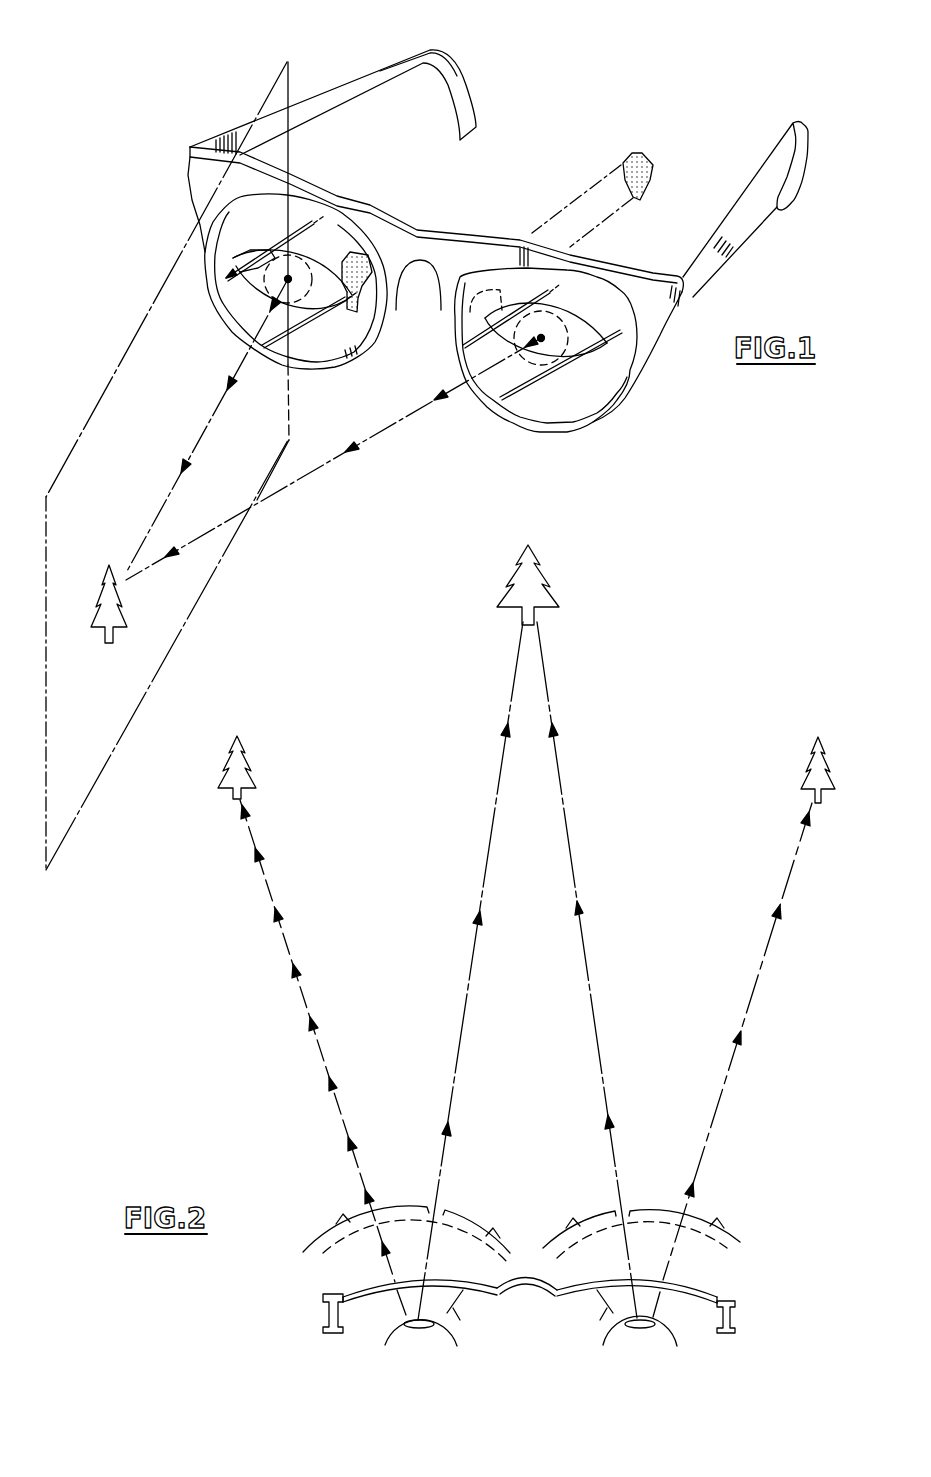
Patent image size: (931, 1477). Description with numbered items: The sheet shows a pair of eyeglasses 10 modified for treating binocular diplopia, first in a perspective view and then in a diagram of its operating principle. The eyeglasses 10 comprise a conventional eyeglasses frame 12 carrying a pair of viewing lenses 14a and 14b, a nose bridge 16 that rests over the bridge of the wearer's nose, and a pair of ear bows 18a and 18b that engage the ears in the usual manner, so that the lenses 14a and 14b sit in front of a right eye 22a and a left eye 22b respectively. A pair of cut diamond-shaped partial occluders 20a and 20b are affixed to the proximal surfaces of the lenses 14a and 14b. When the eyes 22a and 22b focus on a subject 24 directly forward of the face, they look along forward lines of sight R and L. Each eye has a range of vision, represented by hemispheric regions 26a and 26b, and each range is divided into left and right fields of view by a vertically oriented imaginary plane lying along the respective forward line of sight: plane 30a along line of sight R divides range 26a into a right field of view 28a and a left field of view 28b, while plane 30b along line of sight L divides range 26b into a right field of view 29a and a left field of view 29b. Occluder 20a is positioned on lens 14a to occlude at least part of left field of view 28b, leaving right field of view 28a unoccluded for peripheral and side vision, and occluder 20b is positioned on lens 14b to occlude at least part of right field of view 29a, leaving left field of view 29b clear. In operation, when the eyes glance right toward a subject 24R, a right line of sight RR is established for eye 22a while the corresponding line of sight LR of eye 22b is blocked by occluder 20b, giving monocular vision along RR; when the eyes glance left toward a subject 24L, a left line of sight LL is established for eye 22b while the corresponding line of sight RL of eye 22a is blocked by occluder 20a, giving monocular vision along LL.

In FIG. 1, the eyeglasses 10 is at (700, 93).
In FIG. 1, the eyeglasses frame 12 is at (190, 170).
In FIG. 1, the viewing lens 14a is at (228, 228).
In FIG. 2, the viewing lens 14a is at (680, 1283).
In FIG. 1, the viewing lens 14b is at (600, 388).
In FIG. 2, the viewing lens 14b is at (370, 1286).
In FIG. 1, the nose bridge 16 is at (423, 245).
In FIG. 1, the ear bow 18a is at (453, 50).
In FIG. 1, the ear bow 18b is at (807, 148).
In FIG. 1, the partial occluder 20a is at (345, 312).
In FIG. 2, the partial occluder 20a is at (563, 1298).
In FIG. 1, the partial occluder 20b is at (655, 170).
In FIG. 2, the partial occluder 20b is at (488, 1294).
In FIG. 1, the right eye 22a is at (275, 312).
In FIG. 2, the right eye 22a is at (640, 1337).
In FIG. 1, the left eye 22b is at (580, 333).
In FIG. 2, the left eye 22b is at (418, 1333).
In FIG. 1, the subject 24 is at (137, 610).
In FIG. 2, the subject 24 is at (545, 590).
In FIG. 2, the subject 24L is at (248, 762).
In FIG. 2, the subject 24R is at (795, 770).
In FIG. 2, the range of vision 26a is at (730, 1248).
In FIG. 2, the range of vision 26b is at (327, 1250).
In FIG. 2, the right field of view 28a is at (694, 1216).
In FIG. 2, the left field of view 28b is at (579, 1216).
In FIG. 2, the right field of view 29a is at (480, 1223).
In FIG. 2, the left field of view 29b is at (365, 1219).
In FIG. 1, the imaginary plane 30a is at (98, 400).
In FIG. 2, the imaginary plane 30a is at (567, 810).
In FIG. 2, the imaginary plane 30b is at (495, 783).
In FIG. 1, the forward line of sight L is at (333, 458).
In FIG. 1, the forward line of sight R is at (207, 426).
In FIG. 2, the left line of sight LL is at (323, 1057).
In FIG. 2, the right line of sight RR is at (732, 1060).
In FIG. 2, the line of sight LR is at (470, 1311).
In FIG. 2, the line of sight RL is at (588, 1310).